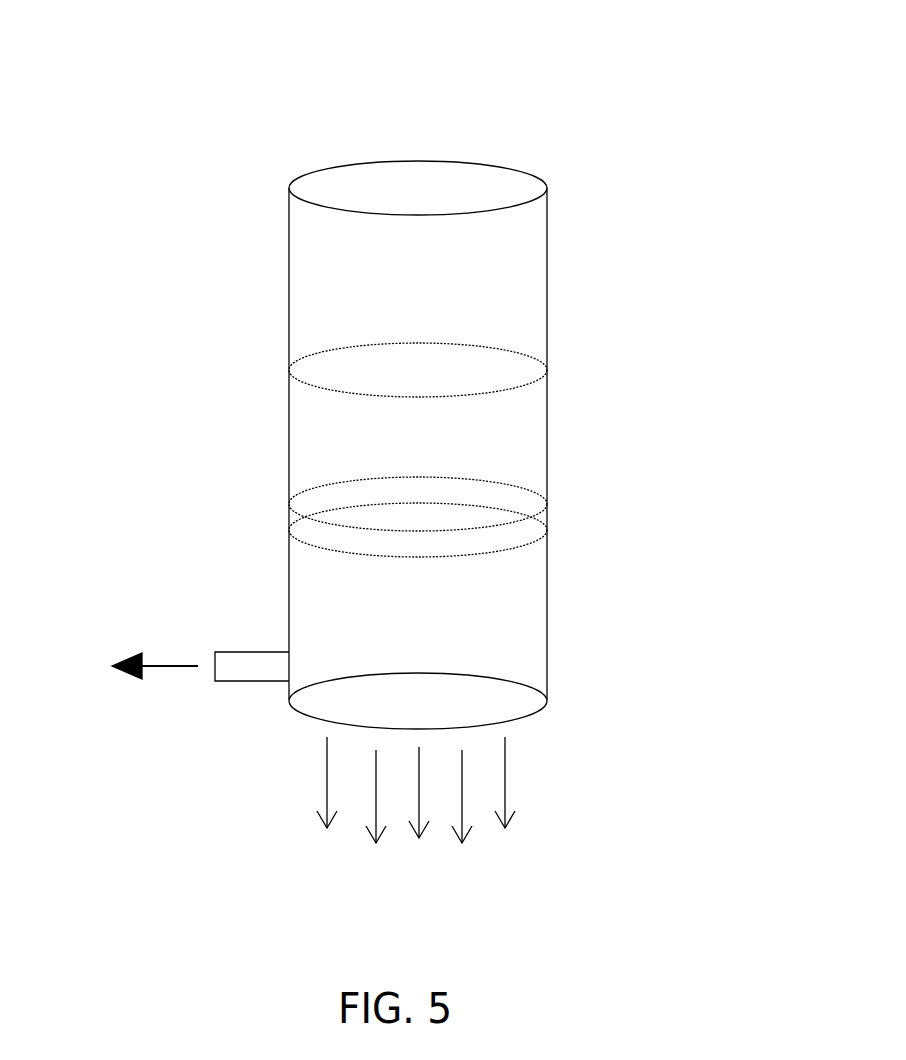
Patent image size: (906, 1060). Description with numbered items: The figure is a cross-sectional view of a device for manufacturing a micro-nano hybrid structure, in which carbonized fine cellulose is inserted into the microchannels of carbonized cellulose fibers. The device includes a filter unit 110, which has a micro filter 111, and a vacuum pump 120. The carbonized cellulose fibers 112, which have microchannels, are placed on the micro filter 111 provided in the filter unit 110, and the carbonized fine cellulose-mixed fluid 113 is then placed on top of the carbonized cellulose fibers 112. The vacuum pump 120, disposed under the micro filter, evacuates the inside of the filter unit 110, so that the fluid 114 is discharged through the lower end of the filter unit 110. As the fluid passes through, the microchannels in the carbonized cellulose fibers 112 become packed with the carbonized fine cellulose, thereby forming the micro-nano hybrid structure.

The filter unit 110 is at (480, 134).
The micro filter 111 is at (602, 498).
The carbonized cellulose fibers 112 is at (602, 378).
The carbonized fine cellulose-mixed fluid 113 is at (602, 188).
The fluid 114 is at (416, 825).
The vacuum pump 120 is at (187, 694).